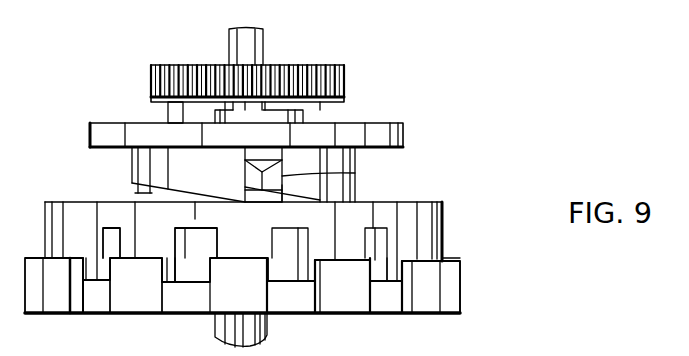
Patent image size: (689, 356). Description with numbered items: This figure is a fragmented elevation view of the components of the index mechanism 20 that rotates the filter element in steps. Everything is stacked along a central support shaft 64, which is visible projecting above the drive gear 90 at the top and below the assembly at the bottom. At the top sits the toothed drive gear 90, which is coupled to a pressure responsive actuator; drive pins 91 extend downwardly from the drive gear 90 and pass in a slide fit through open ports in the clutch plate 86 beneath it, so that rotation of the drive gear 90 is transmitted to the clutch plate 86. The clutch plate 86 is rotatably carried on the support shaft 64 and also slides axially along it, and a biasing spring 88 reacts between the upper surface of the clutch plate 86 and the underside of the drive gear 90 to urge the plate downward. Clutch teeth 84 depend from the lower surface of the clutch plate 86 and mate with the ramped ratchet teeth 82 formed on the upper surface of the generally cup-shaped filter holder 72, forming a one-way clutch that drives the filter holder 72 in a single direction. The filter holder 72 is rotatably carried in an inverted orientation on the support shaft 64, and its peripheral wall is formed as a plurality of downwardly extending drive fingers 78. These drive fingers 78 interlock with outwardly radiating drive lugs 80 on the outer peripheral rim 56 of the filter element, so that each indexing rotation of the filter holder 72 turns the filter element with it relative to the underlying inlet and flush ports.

The index mechanism 20 is at (500, 139).
The outer peripheral rim 56 is at (100, 316).
The support shaft 64 is at (263, 44).
The filter holder 72 is at (422, 210).
The drive fingers 78 is at (187, 265).
The drive lugs 80 is at (351, 303).
The ramped ratchet teeth 82 is at (178, 198).
The clutch teeth 84 is at (134, 168).
The clutch plate 86 is at (375, 130).
The biasing spring 88 is at (302, 110).
The drive gear 90 is at (318, 63).
The drive pins 91 is at (166, 110).